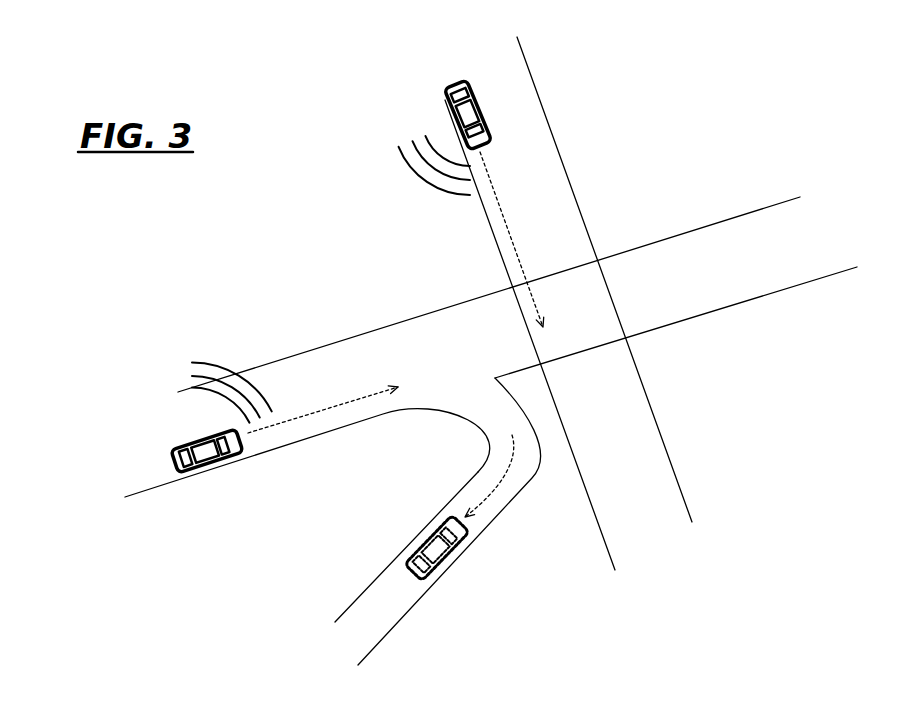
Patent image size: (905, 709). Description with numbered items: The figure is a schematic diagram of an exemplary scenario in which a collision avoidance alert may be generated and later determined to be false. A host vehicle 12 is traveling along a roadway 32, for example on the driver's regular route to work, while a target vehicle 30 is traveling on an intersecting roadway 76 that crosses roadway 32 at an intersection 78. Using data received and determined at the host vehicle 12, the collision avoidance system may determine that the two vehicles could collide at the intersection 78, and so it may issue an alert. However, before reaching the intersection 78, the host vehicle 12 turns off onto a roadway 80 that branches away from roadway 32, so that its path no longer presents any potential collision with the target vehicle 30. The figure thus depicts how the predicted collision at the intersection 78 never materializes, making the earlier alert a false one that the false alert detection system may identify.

The host vehicle 12 is at (188, 430).
The target vehicle 30 is at (461, 72).
The roadway 32 is at (457, 303).
The intersecting roadway 76 is at (563, 167).
The intersection 78 is at (567, 315).
The roadway 80 is at (530, 478).